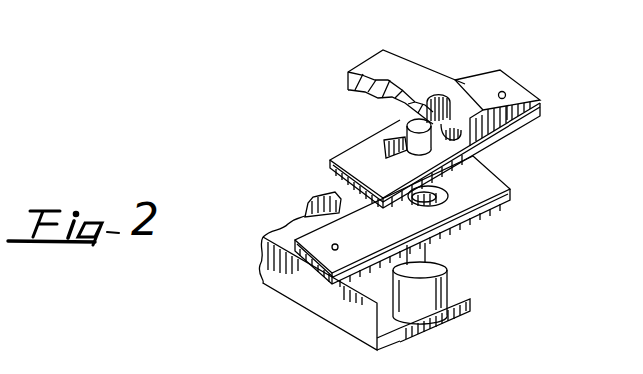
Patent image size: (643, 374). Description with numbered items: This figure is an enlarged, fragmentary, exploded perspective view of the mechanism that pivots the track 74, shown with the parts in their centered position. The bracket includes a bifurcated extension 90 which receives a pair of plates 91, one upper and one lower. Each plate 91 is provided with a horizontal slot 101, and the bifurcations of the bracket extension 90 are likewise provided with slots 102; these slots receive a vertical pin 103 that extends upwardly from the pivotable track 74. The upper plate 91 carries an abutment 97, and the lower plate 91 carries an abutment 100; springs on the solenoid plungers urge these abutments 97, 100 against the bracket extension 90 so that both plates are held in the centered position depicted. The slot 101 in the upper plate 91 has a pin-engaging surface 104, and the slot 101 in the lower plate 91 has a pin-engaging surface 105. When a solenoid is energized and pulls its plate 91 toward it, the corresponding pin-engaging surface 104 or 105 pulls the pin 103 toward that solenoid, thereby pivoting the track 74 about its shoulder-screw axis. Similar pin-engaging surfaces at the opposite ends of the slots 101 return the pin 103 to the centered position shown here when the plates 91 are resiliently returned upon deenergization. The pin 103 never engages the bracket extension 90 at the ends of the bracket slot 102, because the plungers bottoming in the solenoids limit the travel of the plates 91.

The track 74 is at (318, 315).
The bifurcated extension 90 is at (392, 64).
The plates 91 is at (338, 156).
The abutment 97 is at (463, 92).
The abutment 100 is at (383, 273).
The horizontal slot 101 is at (392, 142).
The slots 102 is at (436, 101).
The vertical pin 103 is at (415, 125).
The pin-engaging surface 104 is at (340, 173).
The pin-engaging surface 105 is at (445, 183).